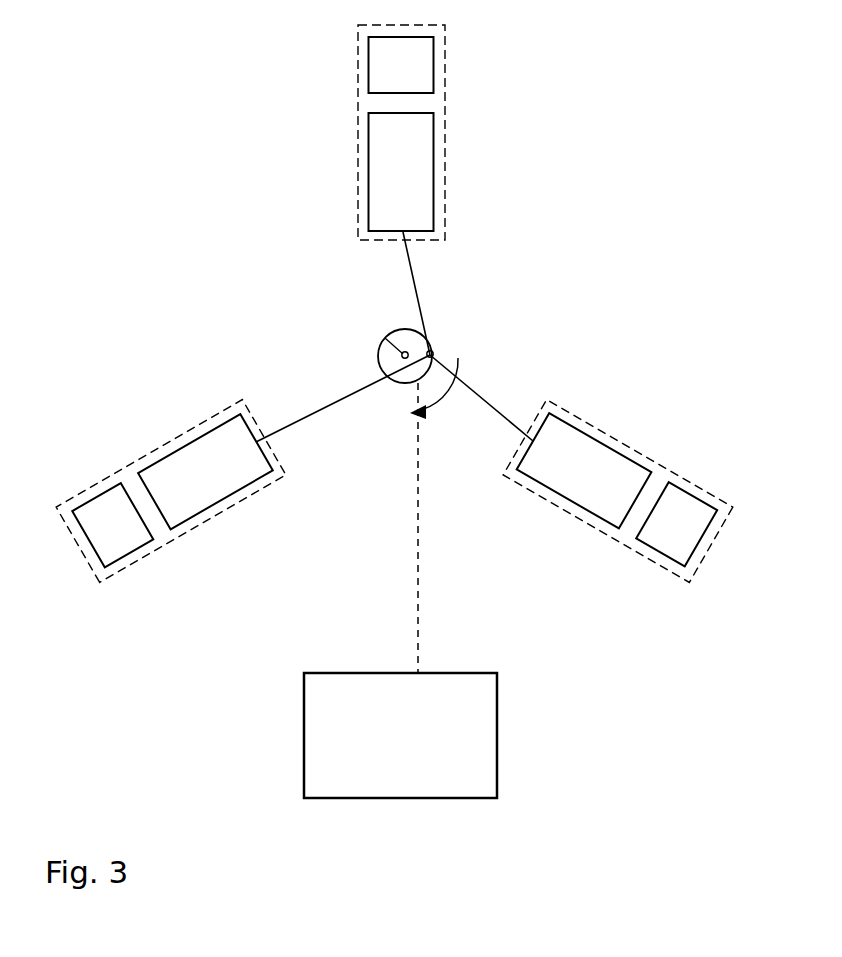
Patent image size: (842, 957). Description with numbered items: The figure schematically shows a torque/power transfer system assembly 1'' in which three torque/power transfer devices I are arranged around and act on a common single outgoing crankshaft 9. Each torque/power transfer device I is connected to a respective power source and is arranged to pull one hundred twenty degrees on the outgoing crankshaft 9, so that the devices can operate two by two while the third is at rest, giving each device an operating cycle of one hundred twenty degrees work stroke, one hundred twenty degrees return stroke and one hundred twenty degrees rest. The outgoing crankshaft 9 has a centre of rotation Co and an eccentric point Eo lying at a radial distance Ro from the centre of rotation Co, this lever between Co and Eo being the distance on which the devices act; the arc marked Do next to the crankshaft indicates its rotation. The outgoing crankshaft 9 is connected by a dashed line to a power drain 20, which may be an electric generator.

The torque/power transfer system assembly 1'' is at (403, 303).
The torque/power transfer device I is at (445, 46).
The outgoing crankshaft 9 is at (383, 347).
The centre of rotation Co is at (400, 357).
The eccentric point Eo is at (434, 353).
The radial distance Ro is at (421, 335).
The direction of rotation Do is at (445, 389).
The power drain 20 is at (400, 735).